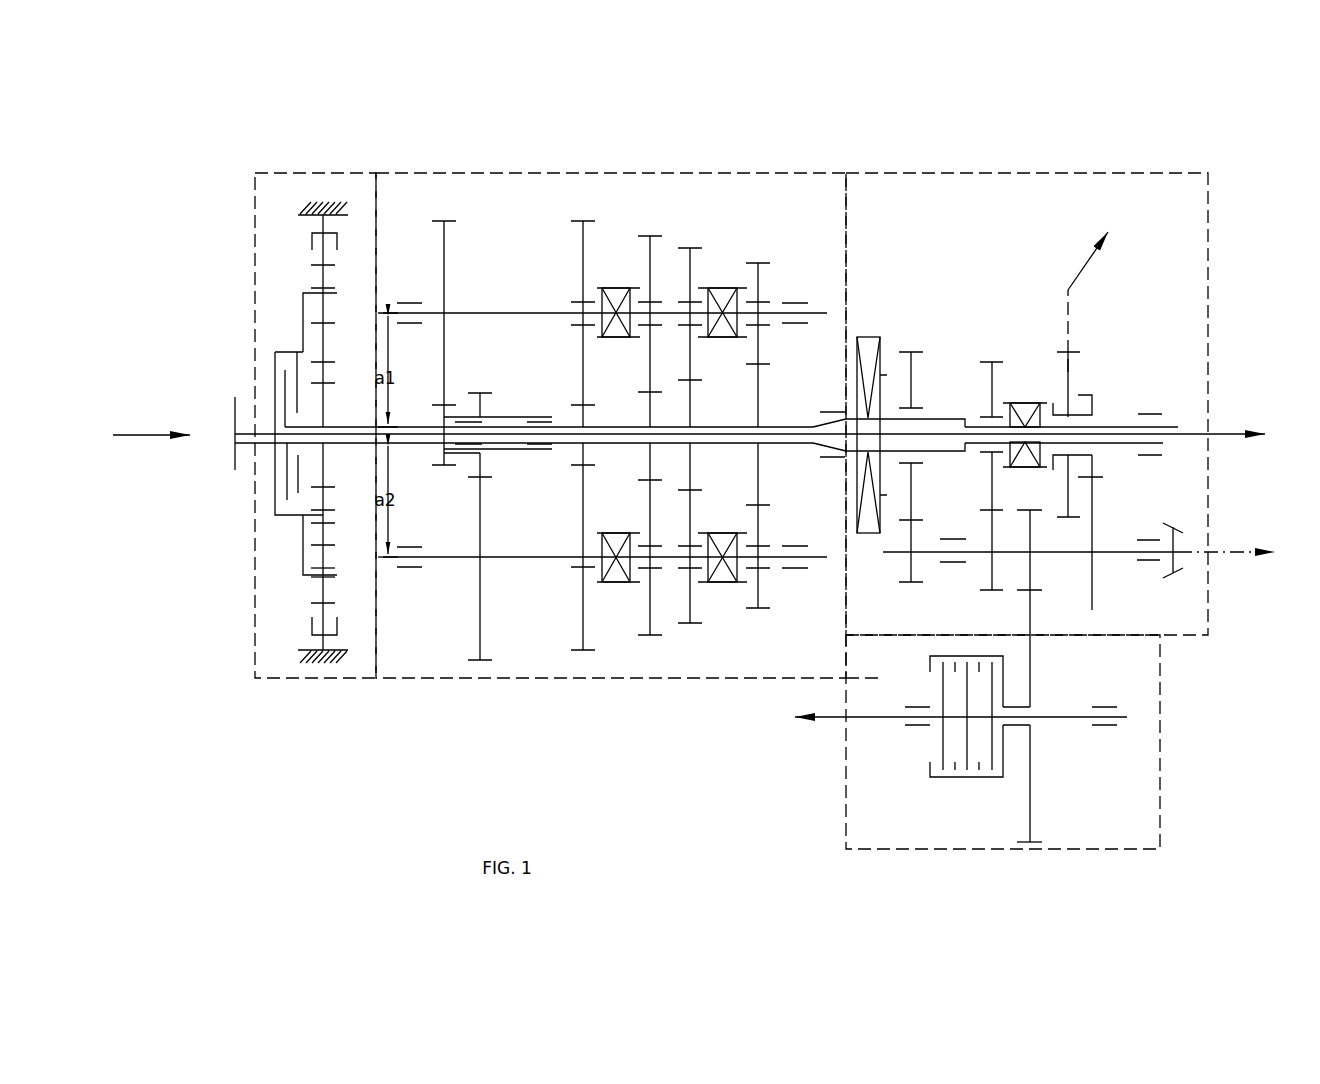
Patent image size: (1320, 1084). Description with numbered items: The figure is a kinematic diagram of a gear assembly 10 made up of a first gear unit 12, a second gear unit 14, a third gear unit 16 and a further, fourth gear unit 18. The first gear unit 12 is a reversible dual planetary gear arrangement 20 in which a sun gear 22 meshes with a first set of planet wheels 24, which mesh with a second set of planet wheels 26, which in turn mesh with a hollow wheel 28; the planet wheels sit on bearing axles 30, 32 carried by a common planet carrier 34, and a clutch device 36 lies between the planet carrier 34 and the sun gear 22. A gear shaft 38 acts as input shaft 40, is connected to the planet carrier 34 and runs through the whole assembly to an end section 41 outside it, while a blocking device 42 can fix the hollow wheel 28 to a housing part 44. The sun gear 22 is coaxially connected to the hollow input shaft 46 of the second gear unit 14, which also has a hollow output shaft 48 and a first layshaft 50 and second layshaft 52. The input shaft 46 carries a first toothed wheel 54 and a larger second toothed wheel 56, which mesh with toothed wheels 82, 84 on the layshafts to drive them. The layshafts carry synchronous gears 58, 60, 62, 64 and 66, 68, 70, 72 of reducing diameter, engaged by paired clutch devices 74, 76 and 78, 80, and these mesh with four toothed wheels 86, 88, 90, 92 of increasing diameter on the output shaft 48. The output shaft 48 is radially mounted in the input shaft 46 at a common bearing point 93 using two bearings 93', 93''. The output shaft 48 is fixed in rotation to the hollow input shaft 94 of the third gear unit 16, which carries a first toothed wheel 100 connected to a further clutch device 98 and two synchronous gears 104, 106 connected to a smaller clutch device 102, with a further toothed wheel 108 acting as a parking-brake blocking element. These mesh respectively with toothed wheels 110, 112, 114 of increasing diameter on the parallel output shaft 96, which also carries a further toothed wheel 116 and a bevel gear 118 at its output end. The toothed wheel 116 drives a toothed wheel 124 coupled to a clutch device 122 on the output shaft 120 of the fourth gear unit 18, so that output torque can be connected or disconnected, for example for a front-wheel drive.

The gear assembly 10 is at (556, 712).
The first gear unit 12 is at (272, 172).
The second gear unit 14 is at (605, 174).
The third gear unit 16 is at (1196, 173).
The further (fourth) gear unit 18 is at (1160, 790).
The planetary gear arrangement 20 is at (292, 331).
The sun gear 22 is at (323, 463).
The first set of planet wheels 24 is at (323, 537).
The second set of planet wheels 26 is at (323, 555).
The hollow wheel 28 is at (323, 618).
The bearing axles 30 is at (318, 515).
The bearing axles 32 is at (310, 577).
The planet carrier 34 is at (275, 507).
The clutch device 36 is at (285, 362).
The gear shaft 38 is at (245, 443).
The input shaft 40 is at (265, 433).
The end section 41 is at (1222, 433).
The blocking device 42 is at (312, 243).
The housing part 44 is at (323, 205).
The input shaft 46 is at (362, 427).
The output shaft 48 is at (703, 317).
The first layshaft 50 is at (503, 313).
The second layshaft 52 is at (513, 557).
The first toothed wheel 54 is at (444, 413).
The second toothed wheel 56 is at (480, 470).
The synchronous gear 58 is at (583, 240).
The synchronous gear 60 is at (650, 248).
The synchronous gear 62 is at (690, 260).
The synchronous gear 64 is at (760, 278).
The synchronous gear 66 is at (615, 583).
The synchronous gear 68 is at (695, 624).
The synchronous gear 70 is at (725, 583).
The synchronous gear 72 is at (760, 596).
The clutch device 74 is at (604, 290).
The clutch device 76 is at (735, 290).
The clutch device 78 is at (650, 636).
The clutch device 80 is at (758, 609).
The toothed wheel 82 is at (445, 248).
The toothed wheel 84 is at (480, 620).
The toothed wheel 86 is at (583, 458).
The toothed wheel 88 is at (643, 458).
The toothed wheel 90 is at (688, 458).
The toothed wheel 92 is at (758, 462).
The common bearing point 93 is at (509, 276).
The bearing 93' is at (467, 378).
The bearing 93'' is at (520, 378).
The input shaft 94 is at (975, 410).
The output shaft 96 is at (1165, 636).
The further clutch device 98 is at (862, 337).
The first toothed wheel 100 is at (912, 372).
The clutch device 102 is at (985, 367).
The synchronous gear 104 is at (1027, 403).
The synchronous gear 106 is at (1092, 403).
The further toothed wheel 108 is at (1068, 372).
The first toothed wheel 110 is at (905, 568).
The second toothed wheel 112 is at (988, 572).
The third toothed wheel 114 is at (1093, 612).
The further toothed wheel 116 is at (1030, 560).
The bevel gear 118 is at (1178, 563).
The output shaft 120 is at (832, 717).
The clutch device 122 is at (962, 778).
The toothed wheel 124 is at (1030, 798).